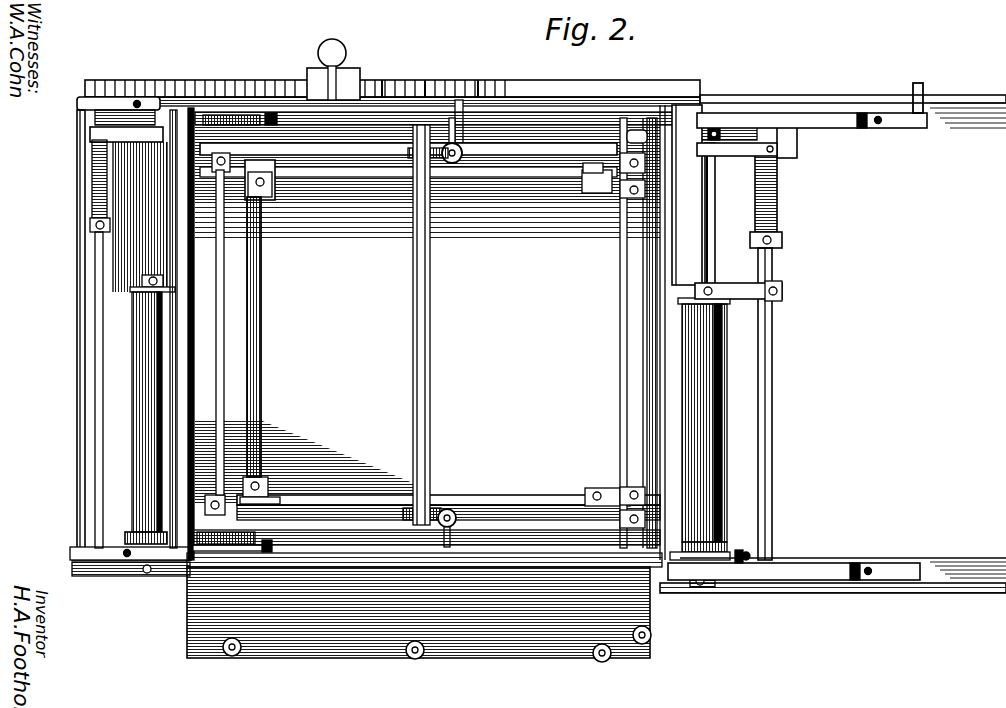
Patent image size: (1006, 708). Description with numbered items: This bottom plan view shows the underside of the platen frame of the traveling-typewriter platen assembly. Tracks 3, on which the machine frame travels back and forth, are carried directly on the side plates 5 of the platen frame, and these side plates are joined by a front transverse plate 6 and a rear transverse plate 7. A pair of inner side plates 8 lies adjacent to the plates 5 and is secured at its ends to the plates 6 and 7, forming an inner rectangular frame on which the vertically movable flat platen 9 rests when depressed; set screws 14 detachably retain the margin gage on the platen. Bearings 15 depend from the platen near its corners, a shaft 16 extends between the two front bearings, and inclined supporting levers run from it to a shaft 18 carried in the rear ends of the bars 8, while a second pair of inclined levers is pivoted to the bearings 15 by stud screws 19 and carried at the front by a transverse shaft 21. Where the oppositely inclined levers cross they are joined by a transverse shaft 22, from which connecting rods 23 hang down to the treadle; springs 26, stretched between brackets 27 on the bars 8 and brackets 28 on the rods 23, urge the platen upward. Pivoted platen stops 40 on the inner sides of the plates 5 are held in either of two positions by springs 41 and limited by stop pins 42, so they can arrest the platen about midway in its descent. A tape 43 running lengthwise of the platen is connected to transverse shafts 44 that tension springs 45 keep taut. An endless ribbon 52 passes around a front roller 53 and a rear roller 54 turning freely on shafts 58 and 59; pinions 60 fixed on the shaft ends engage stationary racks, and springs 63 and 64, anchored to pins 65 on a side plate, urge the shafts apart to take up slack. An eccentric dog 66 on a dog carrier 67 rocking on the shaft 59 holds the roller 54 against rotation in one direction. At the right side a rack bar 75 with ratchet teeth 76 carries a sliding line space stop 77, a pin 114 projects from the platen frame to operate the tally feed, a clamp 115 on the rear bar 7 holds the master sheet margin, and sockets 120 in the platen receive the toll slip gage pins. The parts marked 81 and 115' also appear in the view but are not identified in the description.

The tracks 3 is at (950, 96).
The side plates 5 is at (820, 113).
The front transverse plate 6 is at (195, 283).
The rear transverse plate 7 is at (660, 330).
The inner side plates 8 is at (385, 145).
The platen 9 is at (417, 336).
The set screws 14 is at (414, 660).
The bearings 15 is at (276, 184).
The shaft 16 is at (262, 342).
The shaft 18 is at (590, 174).
The stud shafts 19 is at (605, 193).
The transverse shaft 21 is at (224, 345).
The transverse shaft 22 is at (431, 256).
The connecting rods 23 is at (432, 160).
The springs 26 is at (455, 164).
The brackets 27 is at (462, 122).
The brackets 28 is at (450, 148).
The platen stops 40 is at (222, 113).
The springs 41 is at (210, 116).
The stop pins 42 is at (272, 112).
The tape 43 is at (735, 281).
The transverse shafts 44 is at (97, 292).
The tension springs 45 is at (92, 188).
The endless ribbon 52 is at (788, 404).
The ribbon roller 53 is at (132, 534).
The ribbon roller 54 is at (732, 542).
The shaft 58 is at (150, 252).
The shaft 59 is at (723, 214).
The pinions 60 is at (163, 128).
The spring 63 is at (140, 142).
The spring 64 is at (748, 150).
The pins 65 is at (92, 115).
The eccentric dog 66 is at (738, 563).
The dog carrier 67 is at (748, 560).
The rack bar 75 is at (478, 84).
The ratchet teeth 76 is at (425, 82).
The line space stop 77 is at (382, 80).
The knob 81 is at (340, 50).
The pin 114 is at (920, 82).
The clamp 115 is at (687, 195).
The frame column 115' is at (107, 335).
The sockets 120 is at (425, 538).